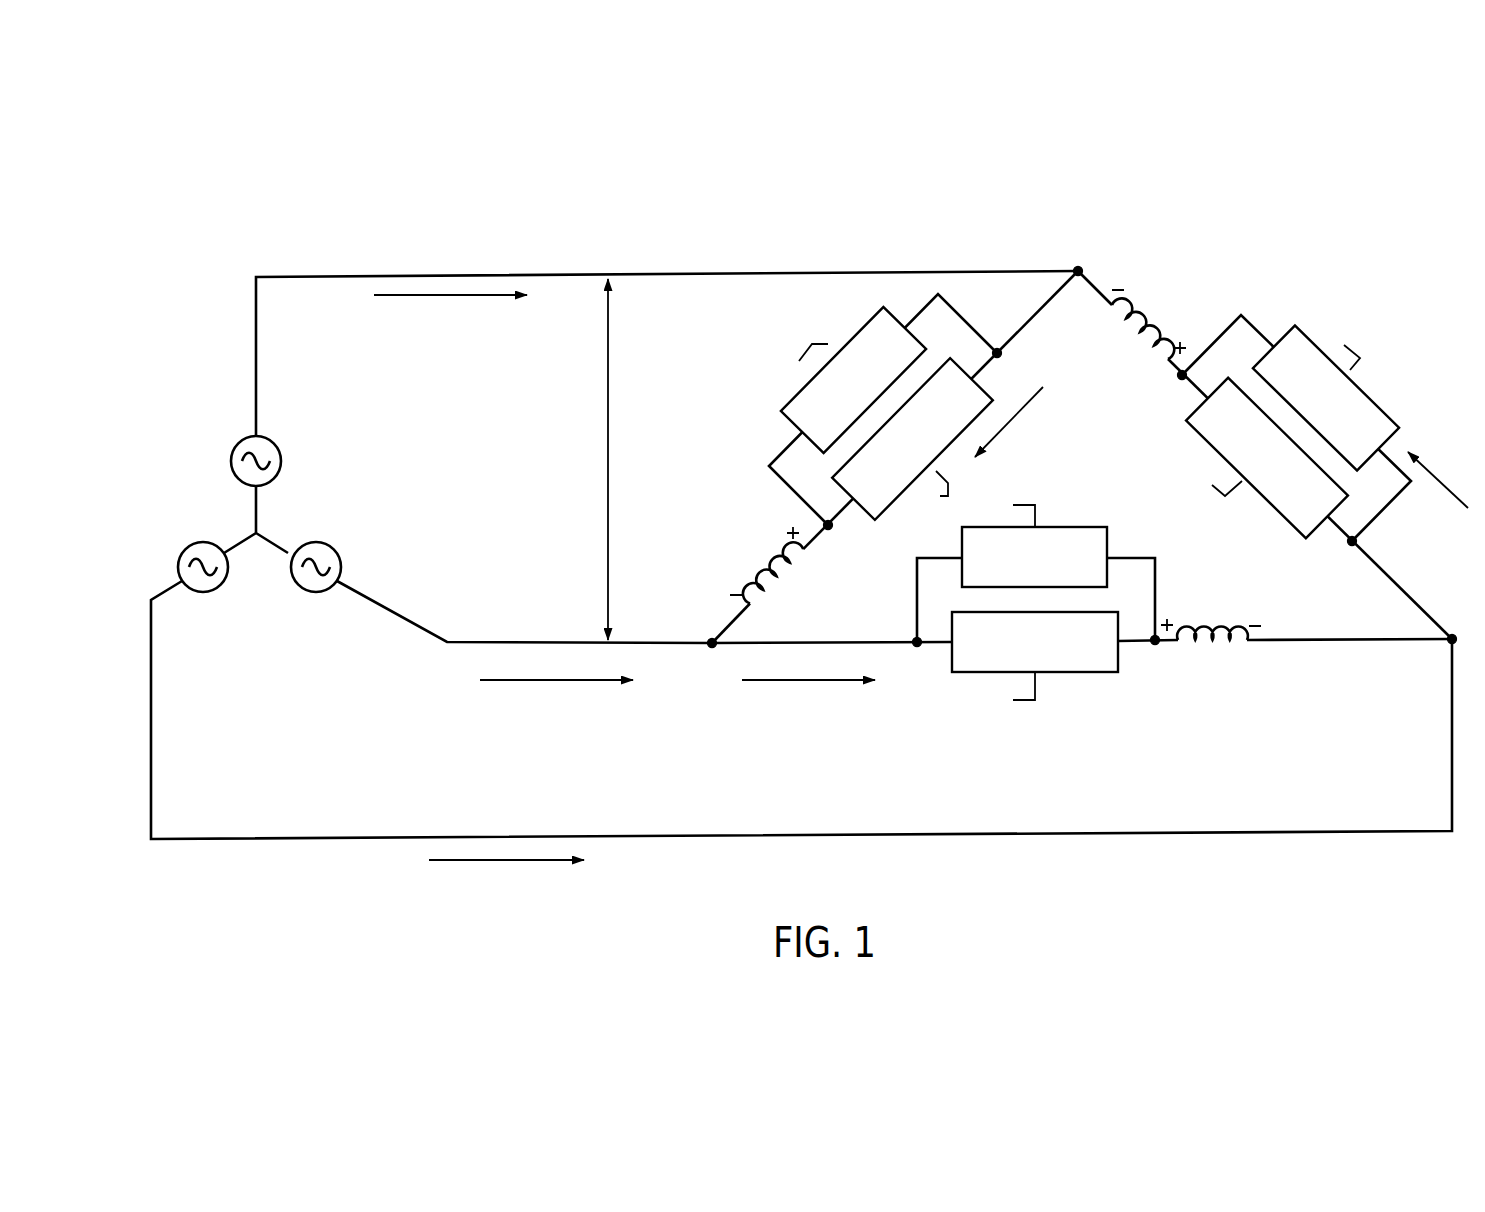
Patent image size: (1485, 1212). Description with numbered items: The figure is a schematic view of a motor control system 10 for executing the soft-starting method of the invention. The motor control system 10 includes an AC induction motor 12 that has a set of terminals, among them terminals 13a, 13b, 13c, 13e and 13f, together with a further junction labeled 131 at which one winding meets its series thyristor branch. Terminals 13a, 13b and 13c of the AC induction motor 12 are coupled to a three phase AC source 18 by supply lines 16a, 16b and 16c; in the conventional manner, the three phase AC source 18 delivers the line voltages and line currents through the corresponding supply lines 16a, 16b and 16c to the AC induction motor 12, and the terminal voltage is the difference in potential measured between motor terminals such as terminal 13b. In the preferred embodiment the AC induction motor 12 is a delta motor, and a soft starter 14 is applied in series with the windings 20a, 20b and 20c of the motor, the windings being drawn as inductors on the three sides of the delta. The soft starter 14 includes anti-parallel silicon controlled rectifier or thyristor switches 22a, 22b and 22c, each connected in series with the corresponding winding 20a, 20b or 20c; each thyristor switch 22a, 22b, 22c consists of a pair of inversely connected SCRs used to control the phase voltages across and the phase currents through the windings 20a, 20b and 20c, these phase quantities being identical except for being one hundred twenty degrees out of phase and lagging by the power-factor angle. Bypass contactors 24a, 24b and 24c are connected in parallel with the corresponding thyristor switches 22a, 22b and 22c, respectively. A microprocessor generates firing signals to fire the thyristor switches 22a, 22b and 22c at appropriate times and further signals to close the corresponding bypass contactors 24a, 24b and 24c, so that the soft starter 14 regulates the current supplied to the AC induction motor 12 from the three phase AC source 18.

The motor control system 10 is at (644, 893).
The AC induction motor 12 is at (1156, 248).
The terminal 13a is at (1076, 268).
The terminal 13b is at (712, 648).
The terminal 13c is at (1447, 650).
The terminal 13e is at (1178, 379).
The terminal 13f is at (1153, 648).
The node 131 is at (824, 524).
The soft starter 14 is at (747, 425).
The supply line 16a is at (622, 274).
The supply line 16b is at (491, 641).
The supply line 16c is at (507, 838).
The three phase AC source 18 is at (198, 498).
The winding 20a is at (792, 582).
The winding 20b is at (1213, 652).
The winding 20c is at (1133, 330).
The thyristor switch 22a is at (866, 519).
The thyristor switch 22b is at (1067, 674).
The thyristor switch 22c is at (1292, 524).
The bypass contactor 24a is at (868, 322).
The bypass contactor 24b is at (1082, 527).
The bypass contactor 24c is at (1279, 333).